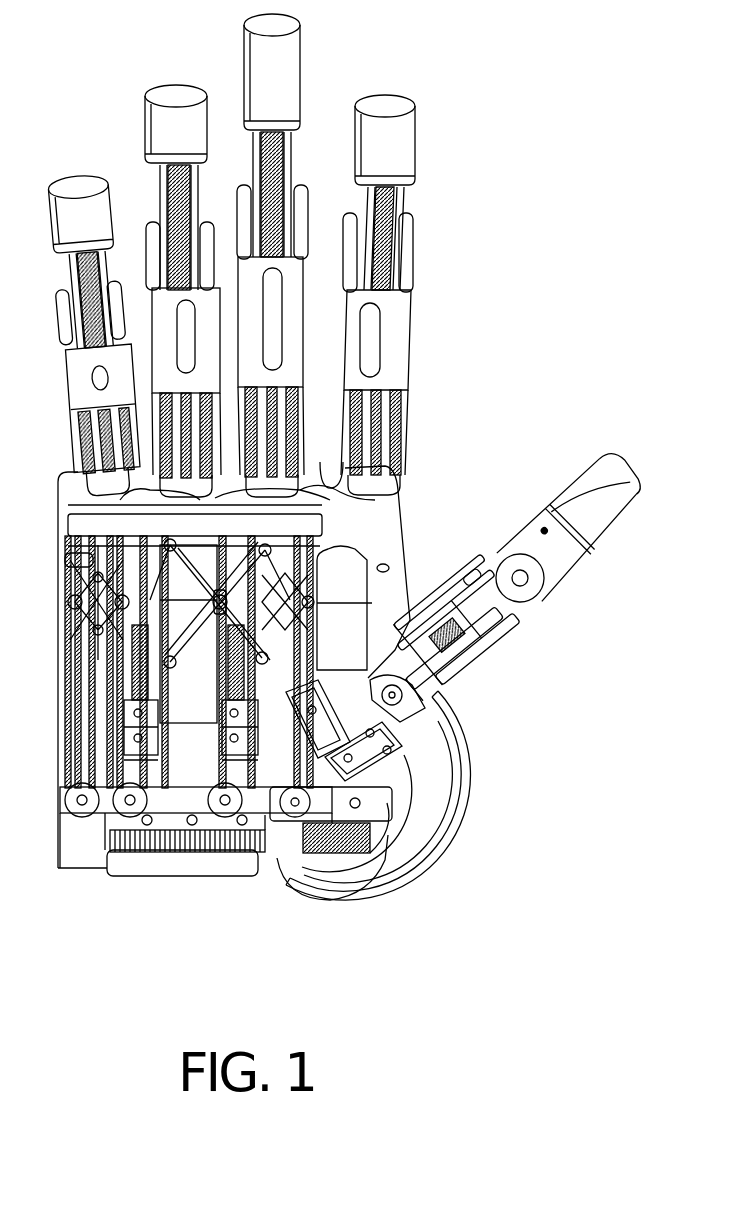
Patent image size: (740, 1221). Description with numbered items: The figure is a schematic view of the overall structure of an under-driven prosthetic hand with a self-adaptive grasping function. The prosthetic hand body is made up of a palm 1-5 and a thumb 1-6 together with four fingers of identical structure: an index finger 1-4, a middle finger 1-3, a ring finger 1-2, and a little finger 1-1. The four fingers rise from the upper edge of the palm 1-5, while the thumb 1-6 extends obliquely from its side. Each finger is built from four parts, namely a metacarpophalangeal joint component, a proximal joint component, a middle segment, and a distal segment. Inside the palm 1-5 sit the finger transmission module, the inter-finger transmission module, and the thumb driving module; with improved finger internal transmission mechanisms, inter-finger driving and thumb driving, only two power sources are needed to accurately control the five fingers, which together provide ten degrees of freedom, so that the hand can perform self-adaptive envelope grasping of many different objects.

The little finger 1-1 is at (95, 357).
The ring finger 1-2 is at (208, 363).
The middle finger 1-3 is at (290, 368).
The index finger 1-4 is at (385, 373).
The palm 1-5 is at (378, 508).
The thumb 1-6 is at (450, 598).